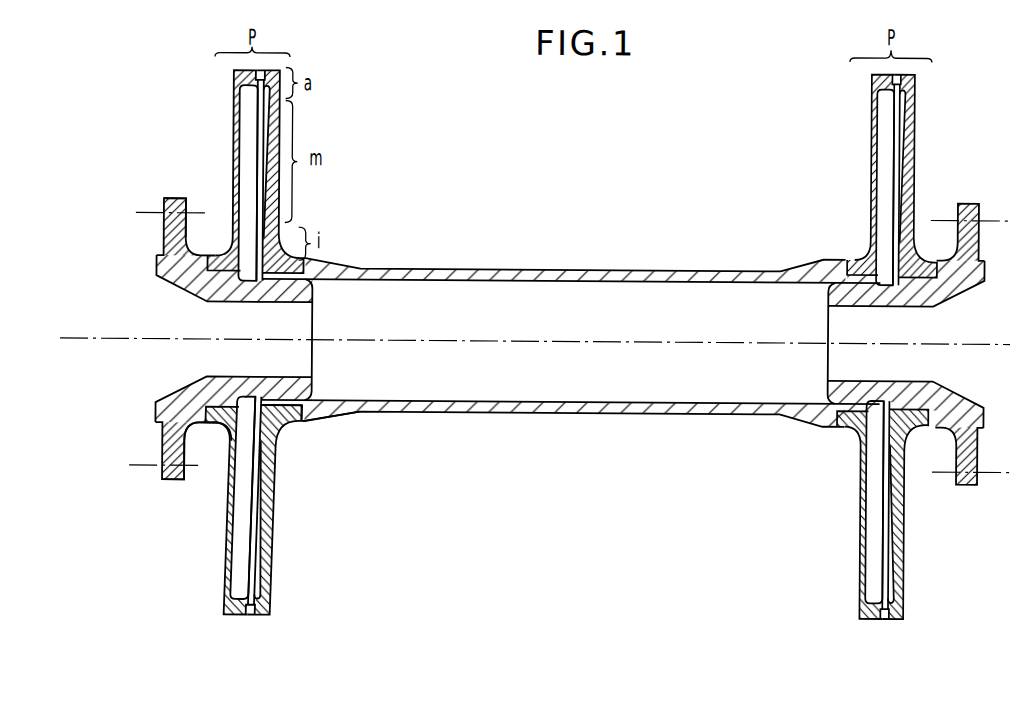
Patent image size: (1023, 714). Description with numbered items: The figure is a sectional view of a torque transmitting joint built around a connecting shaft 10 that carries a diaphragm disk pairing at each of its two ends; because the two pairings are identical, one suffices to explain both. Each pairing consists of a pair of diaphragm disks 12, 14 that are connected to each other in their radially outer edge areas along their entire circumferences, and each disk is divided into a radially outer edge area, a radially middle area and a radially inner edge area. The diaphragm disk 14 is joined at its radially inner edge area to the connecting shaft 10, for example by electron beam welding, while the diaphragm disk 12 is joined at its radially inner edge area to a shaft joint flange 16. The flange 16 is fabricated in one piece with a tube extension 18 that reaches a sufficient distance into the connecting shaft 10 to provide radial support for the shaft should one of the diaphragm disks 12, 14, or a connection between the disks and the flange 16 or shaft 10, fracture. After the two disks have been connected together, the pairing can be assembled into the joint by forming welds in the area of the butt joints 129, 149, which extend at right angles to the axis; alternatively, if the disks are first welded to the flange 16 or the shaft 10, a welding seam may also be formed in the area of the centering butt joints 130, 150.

The connecting shaft 10 is at (613, 414).
The diaphragm disk 12 is at (232, 123).
The diaphragm disk 14 is at (278, 131).
The shaft joint flange 16 is at (172, 230).
The tube extension 18 is at (313, 293).
The butt joint 129 is at (196, 416).
The centering butt joint 130 is at (216, 398).
The butt joint 149 is at (313, 416).
The centering butt joint 150 is at (300, 410).